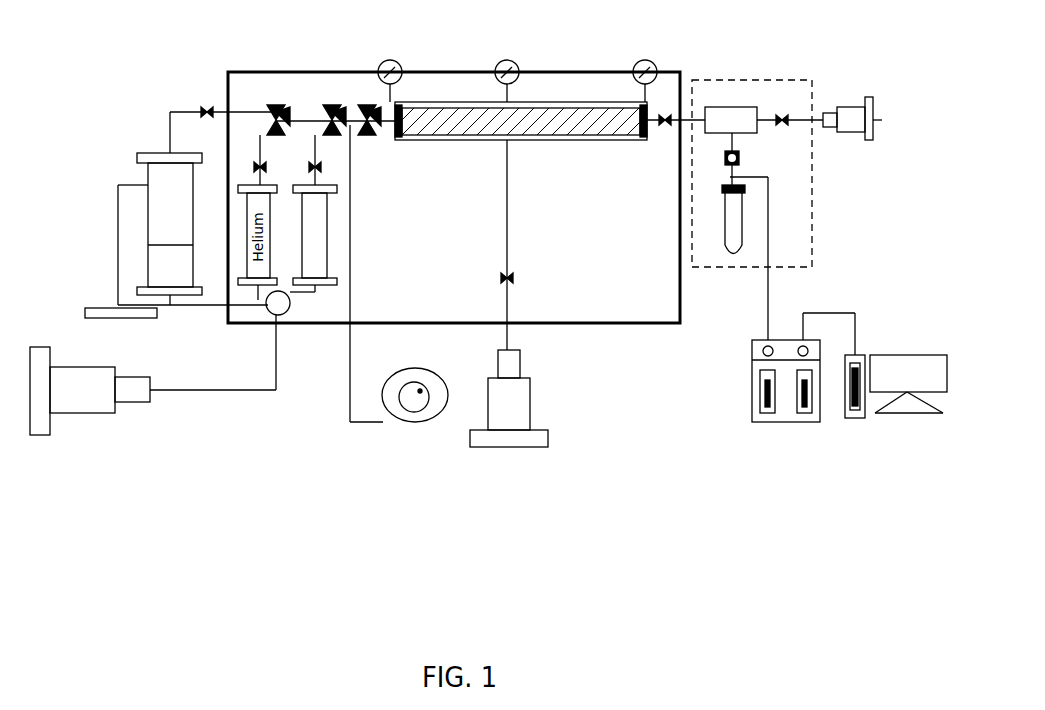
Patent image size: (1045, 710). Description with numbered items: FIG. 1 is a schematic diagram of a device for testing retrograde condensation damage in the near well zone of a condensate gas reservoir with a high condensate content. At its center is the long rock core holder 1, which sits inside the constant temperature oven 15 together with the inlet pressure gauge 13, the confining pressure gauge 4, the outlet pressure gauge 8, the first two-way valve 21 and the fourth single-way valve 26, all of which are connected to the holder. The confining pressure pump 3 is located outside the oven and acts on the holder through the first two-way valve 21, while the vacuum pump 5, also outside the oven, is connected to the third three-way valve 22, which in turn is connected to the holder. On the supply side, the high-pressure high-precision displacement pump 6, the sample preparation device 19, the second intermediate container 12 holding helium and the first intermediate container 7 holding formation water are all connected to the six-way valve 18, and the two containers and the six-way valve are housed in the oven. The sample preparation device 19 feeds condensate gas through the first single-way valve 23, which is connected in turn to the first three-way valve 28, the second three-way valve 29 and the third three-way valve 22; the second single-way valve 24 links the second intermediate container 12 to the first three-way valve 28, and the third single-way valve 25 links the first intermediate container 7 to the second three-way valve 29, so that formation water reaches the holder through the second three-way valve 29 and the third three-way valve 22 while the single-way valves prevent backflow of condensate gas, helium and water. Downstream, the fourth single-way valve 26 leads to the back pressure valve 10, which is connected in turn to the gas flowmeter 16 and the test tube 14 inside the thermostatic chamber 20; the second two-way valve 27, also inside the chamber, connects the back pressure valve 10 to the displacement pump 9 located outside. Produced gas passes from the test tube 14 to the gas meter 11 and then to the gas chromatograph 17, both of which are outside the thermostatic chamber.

The long rock core holder 1 is at (480, 137).
The confining pressure pump 3 is at (530, 405).
The confining pressure gauge 4 is at (509, 60).
The vacuum pump 5 is at (411, 430).
The high-pressure high-precision displacement pump 6 is at (45, 348).
The first intermediate container 7 is at (330, 242).
The outlet pressure gauge 8 is at (645, 60).
The displacement pump 9 is at (860, 118).
The back pressure valve 10 is at (712, 105).
The gas meter 11 is at (785, 424).
The second intermediate container 12 is at (268, 292).
The inlet pressure gauge 13 is at (391, 60).
The test tube 14 is at (733, 237).
The constant temperature oven 15 is at (611, 325).
The gas flowmeter 16 is at (738, 150).
The gas chromatograph 17 is at (900, 353).
The six-way valve 18 is at (290, 316).
The sample preparation device 19 is at (147, 183).
The thermostatic chamber 20 is at (814, 172).
The first two-way valve 21 is at (512, 272).
The third three-way valve 22 is at (369, 132).
The first single-way valve 23 is at (205, 109).
The second single-way valve 24 is at (258, 160).
The third single-way valve 25 is at (313, 160).
The fourth single-way valve 26 is at (667, 128).
The second two-way valve 27 is at (790, 113).
The first three-way valve 28 is at (270, 108).
The second three-way valve 29 is at (333, 107).